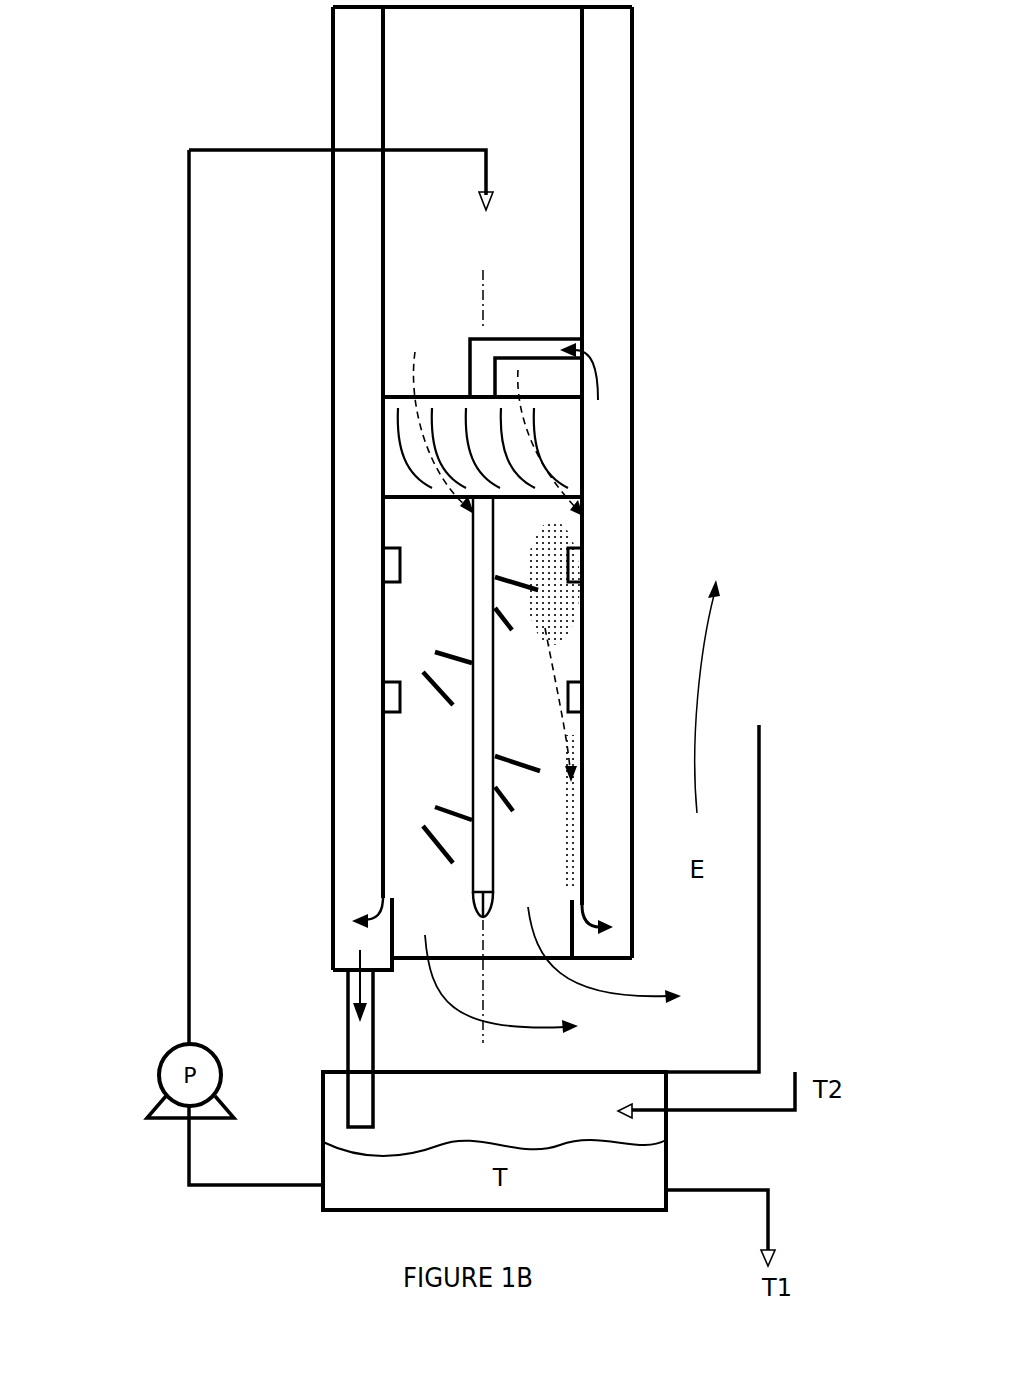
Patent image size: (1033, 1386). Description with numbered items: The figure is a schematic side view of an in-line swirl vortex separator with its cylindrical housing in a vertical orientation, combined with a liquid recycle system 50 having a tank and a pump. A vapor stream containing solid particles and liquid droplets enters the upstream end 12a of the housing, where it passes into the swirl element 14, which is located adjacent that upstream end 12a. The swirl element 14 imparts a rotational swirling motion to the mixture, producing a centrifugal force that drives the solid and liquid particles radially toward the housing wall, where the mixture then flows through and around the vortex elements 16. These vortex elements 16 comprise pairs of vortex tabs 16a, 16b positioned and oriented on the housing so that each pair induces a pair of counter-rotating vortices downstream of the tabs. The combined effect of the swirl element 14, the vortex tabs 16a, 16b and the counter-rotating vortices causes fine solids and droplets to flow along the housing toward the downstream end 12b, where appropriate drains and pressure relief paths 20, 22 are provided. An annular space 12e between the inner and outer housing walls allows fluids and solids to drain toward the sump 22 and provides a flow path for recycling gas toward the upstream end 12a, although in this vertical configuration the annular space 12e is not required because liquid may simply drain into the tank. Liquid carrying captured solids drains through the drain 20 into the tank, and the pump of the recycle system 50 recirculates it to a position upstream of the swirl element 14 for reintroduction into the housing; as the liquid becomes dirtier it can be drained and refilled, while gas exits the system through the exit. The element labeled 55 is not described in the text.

The liquid recycle system 50 is at (118, 435).
The upstream end of the housing 12a is at (508, 275).
The downstream end of the housing 12b is at (508, 1000).
The annular space 12e is at (363, 717).
The swirl element 14 is at (537, 439).
The vortex elements 16 is at (388, 567).
The vortex tab 16a is at (435, 852).
The vortex tab 16b is at (437, 806).
The drain 20 is at (388, 897).
The sump 22 is at (360, 1032).
The deflector plate 55 is at (535, 348).